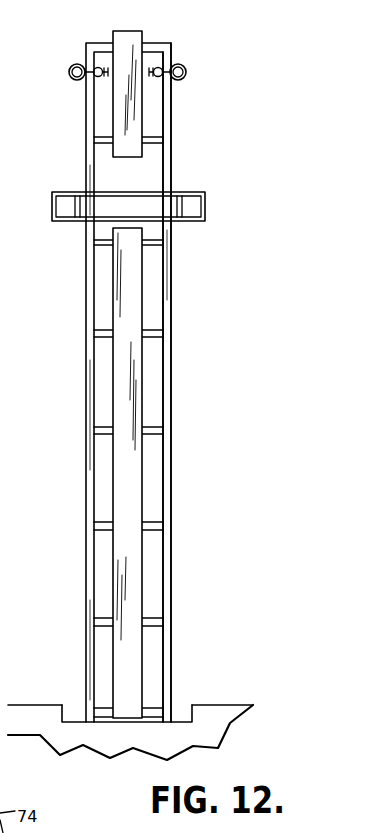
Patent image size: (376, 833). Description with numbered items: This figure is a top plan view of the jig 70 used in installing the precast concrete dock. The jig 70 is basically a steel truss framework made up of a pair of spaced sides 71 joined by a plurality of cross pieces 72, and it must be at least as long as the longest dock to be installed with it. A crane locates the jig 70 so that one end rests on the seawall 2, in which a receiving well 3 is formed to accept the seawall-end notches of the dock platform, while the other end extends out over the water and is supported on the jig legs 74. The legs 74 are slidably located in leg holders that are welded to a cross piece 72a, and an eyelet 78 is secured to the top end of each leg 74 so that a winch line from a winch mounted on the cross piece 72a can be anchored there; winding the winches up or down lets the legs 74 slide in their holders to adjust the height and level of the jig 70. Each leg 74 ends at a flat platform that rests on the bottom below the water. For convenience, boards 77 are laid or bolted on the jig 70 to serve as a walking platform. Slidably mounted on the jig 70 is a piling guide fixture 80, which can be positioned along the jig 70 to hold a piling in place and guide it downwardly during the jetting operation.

The seawall 2 is at (208, 712).
The receiving well 3 is at (66, 708).
The jig 70 is at (181, 371).
The sides 71 is at (172, 470).
The cross pieces 72 is at (153, 44).
The cross piece 72a is at (150, 141).
The jig legs 74 is at (82, 77).
The boards 77 is at (128, 570).
The eyelet 78 is at (95, 78).
The piling guide fixture 80 is at (216, 206).